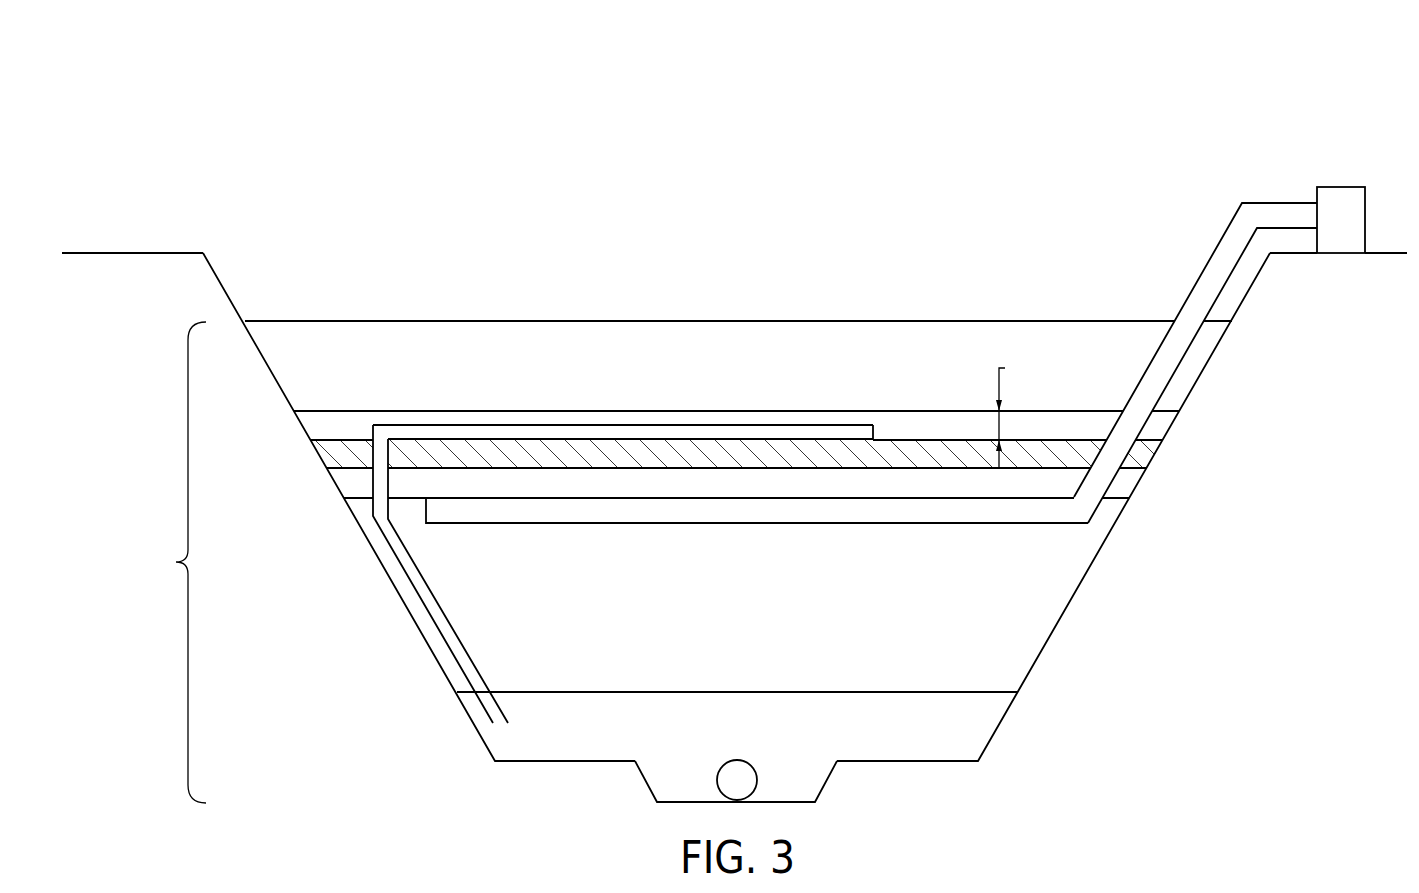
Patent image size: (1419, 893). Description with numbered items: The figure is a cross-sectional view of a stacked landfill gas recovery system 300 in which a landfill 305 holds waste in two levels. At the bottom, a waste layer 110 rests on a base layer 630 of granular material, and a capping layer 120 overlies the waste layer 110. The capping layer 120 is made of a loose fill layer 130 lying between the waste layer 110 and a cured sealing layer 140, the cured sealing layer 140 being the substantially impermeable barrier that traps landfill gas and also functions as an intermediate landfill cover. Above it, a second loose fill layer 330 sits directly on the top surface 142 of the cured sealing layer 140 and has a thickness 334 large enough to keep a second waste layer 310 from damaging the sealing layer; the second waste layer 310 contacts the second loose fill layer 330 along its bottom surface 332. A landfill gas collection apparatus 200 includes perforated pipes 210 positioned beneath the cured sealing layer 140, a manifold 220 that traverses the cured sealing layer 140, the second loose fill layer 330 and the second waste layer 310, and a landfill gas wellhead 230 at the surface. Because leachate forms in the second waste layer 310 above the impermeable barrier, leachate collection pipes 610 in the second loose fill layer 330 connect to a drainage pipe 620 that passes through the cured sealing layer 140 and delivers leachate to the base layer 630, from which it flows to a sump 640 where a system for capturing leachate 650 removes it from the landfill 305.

The stacked landfill gas recovery system 300 is at (1214, 106).
The landfill 305 is at (161, 562).
The second waste layer 310 is at (268, 364).
The waste layer 110 is at (1092, 570).
The capping layer 120 is at (735, 433).
The loose fill layer 130 is at (338, 483).
The cured sealing layer 140 is at (321, 455).
The top surface of the cured sealing layer 142 is at (913, 439).
The landfill gas collection apparatus 200 is at (871, 370).
The perforated pipes 210 is at (757, 524).
The manifold 220 is at (1184, 363).
The landfill gas wellhead 230 is at (1340, 187).
The second loose fill layer 330 is at (702, 405).
The bottom surface of the second loose fill layer 332 is at (815, 411).
The thickness of the second loose fill layer 334 is at (1025, 410).
The leachate collection pipes 610 is at (722, 425).
The drainage pipe 620 is at (450, 622).
The base layer 630 is at (1002, 722).
The sump 640 is at (830, 780).
The system for capturing leachate 650 is at (737, 760).